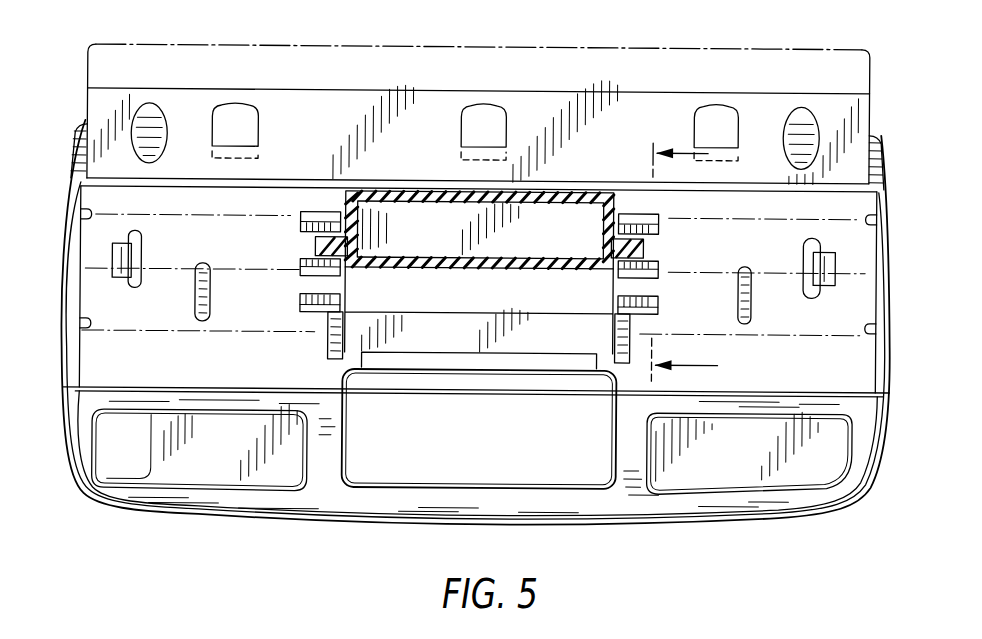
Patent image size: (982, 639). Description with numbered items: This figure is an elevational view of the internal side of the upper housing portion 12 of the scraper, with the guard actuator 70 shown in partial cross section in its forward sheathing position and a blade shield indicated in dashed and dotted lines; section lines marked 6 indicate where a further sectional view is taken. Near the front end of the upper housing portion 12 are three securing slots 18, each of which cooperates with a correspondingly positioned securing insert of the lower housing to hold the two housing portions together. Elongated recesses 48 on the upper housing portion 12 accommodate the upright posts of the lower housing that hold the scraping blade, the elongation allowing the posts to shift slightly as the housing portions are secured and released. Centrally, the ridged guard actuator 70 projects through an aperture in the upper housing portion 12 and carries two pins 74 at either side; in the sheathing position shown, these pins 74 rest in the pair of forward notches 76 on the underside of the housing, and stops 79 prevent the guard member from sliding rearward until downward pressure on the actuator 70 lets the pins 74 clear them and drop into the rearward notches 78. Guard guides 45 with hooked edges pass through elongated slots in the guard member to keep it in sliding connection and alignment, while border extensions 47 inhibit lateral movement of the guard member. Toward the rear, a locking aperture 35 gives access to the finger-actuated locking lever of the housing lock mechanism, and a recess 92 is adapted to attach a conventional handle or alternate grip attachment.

The upper housing portion 12 is at (82, 484).
The securing slot 18 is at (240, 118).
The recess 48 is at (148, 106).
The section line 6- 6 is at (696, 262).
The guard actuator 70 is at (447, 207).
The pin 74 is at (320, 212).
The forward notch 76 is at (316, 251).
The stop 79 is at (300, 269).
The rearward notch 78 is at (307, 284).
The guard guide 45 is at (112, 261).
The border extension 47 is at (195, 292).
The recess 92 is at (218, 434).
The locking aperture 35 is at (382, 476).